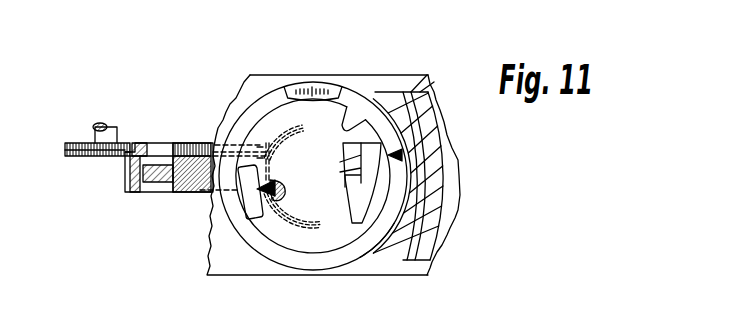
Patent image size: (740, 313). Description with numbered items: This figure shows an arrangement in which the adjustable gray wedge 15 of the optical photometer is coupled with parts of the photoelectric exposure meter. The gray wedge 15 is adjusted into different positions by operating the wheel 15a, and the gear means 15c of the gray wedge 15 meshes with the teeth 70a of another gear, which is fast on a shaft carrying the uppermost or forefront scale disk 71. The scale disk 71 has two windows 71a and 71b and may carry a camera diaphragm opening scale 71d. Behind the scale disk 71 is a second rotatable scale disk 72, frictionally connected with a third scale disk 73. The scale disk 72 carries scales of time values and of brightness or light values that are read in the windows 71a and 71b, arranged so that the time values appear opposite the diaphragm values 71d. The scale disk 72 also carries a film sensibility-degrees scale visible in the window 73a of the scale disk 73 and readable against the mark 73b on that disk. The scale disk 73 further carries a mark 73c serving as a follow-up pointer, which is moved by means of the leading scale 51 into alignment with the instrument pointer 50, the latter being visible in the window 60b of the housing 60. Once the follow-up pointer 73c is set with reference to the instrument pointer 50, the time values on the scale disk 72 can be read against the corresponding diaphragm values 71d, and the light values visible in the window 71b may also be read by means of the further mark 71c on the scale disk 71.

The gray wedge 15 is at (155, 180).
The wheel 15a is at (80, 153).
The gear means 15c is at (177, 143).
The instrument pointer 50 is at (424, 122).
The leading scale 51 is at (412, 208).
The housing 60 is at (222, 260).
The window 60b is at (412, 92).
The teeth 70a is at (280, 133).
The scale disk 71 is at (315, 233).
The window 71a is at (357, 121).
The window 71b is at (232, 170).
The mark 71c is at (275, 215).
The camera diaphragm opening scale 71d is at (350, 222).
The second rotatable scale disk 72 is at (372, 249).
The third scale disk 73 is at (393, 180).
The window 73a is at (322, 86).
The mark 73b is at (300, 89).
The follow up pointer 73c is at (402, 155).